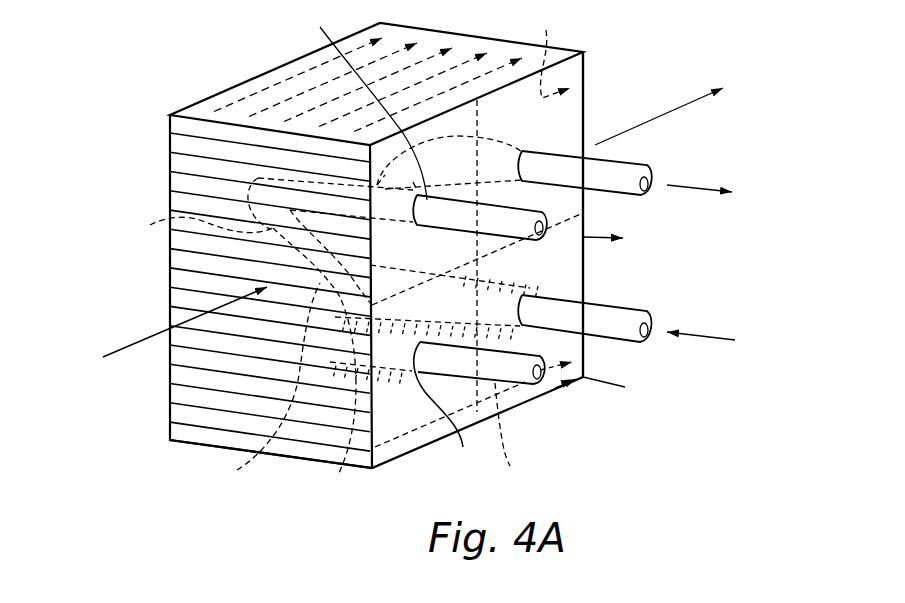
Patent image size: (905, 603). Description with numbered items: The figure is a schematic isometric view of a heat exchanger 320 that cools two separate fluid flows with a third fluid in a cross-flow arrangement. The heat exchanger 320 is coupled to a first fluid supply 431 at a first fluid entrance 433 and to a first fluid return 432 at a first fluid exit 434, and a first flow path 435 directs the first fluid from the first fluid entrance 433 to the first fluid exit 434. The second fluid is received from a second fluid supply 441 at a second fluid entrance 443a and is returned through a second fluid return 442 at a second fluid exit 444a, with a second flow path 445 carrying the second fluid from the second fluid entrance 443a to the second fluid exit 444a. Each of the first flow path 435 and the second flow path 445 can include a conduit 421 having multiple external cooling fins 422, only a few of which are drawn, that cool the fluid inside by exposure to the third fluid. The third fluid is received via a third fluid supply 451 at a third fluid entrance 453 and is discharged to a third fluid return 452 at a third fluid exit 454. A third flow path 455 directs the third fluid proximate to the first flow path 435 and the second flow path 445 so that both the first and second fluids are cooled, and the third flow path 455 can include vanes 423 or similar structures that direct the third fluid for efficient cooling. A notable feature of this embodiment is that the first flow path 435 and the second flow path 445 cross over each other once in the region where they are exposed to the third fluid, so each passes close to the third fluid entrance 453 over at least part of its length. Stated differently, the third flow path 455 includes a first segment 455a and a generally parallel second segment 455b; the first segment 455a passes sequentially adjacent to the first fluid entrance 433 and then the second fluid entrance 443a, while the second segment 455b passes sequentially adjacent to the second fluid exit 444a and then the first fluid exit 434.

The heat exchanger 320 is at (100, 118).
The vanes 423 is at (213, 292).
The third fluid entrance 453 is at (183, 442).
The third fluid exit 454 is at (585, 73).
The third flow path 455 is at (284, 76).
The second segment 455b is at (547, 53).
The second fluid exit 444a is at (411, 101).
The first fluid exit 434 is at (523, 153).
The third fluid return 452 is at (683, 108).
The first fluid return 432 is at (705, 190).
The second fluid return 442 is at (598, 235).
The second flow path 445 is at (194, 210).
The second fluid entrance 443a is at (525, 296).
The second fluid supply 441 is at (705, 339).
The conduit 421 is at (522, 328).
The first fluid supply 431 is at (593, 383).
The first fluid entrance 433 is at (447, 409).
The cooling fins 422 is at (505, 324).
The first segment 455a is at (525, 437).
The first flow path 435 is at (260, 388).
The third fluid supply 451 is at (132, 345).